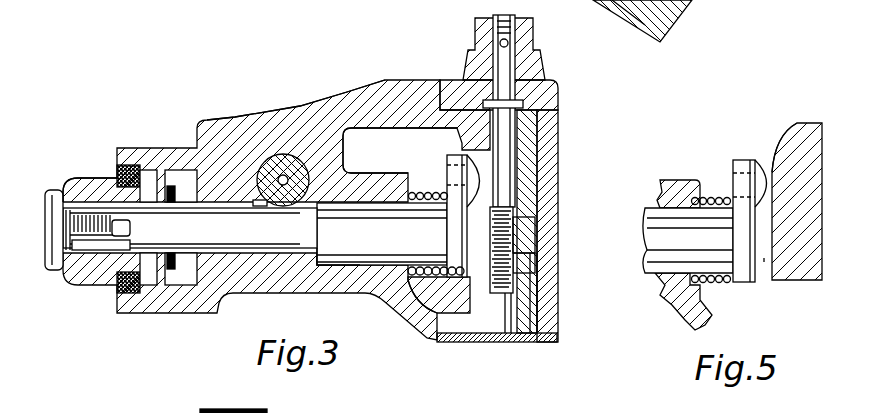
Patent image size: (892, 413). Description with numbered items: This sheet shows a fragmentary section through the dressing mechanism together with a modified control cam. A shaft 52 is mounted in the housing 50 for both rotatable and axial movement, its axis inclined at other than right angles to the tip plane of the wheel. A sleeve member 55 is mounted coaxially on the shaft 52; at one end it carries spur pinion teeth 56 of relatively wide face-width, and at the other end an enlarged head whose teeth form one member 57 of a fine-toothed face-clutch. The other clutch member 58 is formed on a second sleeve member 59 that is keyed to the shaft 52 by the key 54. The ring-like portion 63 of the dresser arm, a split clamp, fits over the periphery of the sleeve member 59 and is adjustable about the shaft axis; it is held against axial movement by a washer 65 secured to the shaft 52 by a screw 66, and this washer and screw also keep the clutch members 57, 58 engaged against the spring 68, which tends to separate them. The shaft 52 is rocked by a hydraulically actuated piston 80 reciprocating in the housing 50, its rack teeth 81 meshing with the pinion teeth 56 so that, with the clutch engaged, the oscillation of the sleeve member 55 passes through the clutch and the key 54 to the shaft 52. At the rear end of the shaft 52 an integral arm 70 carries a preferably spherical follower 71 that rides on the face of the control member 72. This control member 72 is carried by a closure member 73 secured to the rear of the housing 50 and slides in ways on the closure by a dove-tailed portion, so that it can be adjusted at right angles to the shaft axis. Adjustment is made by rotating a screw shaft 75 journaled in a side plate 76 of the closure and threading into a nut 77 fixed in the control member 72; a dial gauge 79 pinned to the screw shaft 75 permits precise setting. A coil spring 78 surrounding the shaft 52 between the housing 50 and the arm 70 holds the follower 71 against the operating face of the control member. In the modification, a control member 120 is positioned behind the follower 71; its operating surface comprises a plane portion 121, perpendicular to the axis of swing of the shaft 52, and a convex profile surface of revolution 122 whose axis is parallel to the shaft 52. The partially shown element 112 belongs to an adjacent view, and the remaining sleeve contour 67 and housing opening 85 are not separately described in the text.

In FIG. 3, the housing 50 is at (364, 288).
In FIG. 5, the housing 50 is at (680, 308).
In FIG. 3, the shaft 52 is at (285, 245).
In FIG. 5, the shaft 52 is at (657, 237).
In FIG. 3, the key 54 is at (100, 252).
In FIG. 3, the sleeve member 55 is at (240, 137).
In FIG. 3, the spur pinion teeth 56 is at (297, 262).
In FIG. 3, the clutch member 57 is at (172, 268).
In FIG. 3, the clutch member 58 is at (160, 178).
In FIG. 3, the sleeve member 59 is at (100, 200).
In FIG. 3, the ring-like portion 63 is at (90, 275).
In FIG. 3, the washer 65 is at (55, 190).
In FIG. 3, the screw 66 is at (70, 243).
In FIG. 3, the sleeve 67 is at (82, 178).
In FIG. 3, the spring 68 is at (172, 186).
In FIG. 3, the arm 70 is at (456, 278).
In FIG. 5, the arm 70 is at (745, 285).
In FIG. 3, the follower 71 is at (481, 205).
In FIG. 5, the follower 71 is at (765, 165).
In FIG. 3, the control member 72 is at (527, 165).
In FIG. 3, the closure member 73 is at (553, 120).
In FIG. 3, the screw shaft 75 is at (505, 150).
In FIG. 3, the side plate 76 is at (553, 92).
In FIG. 3, the nut 77 is at (530, 232).
In FIG. 3, the coil spring 78 is at (415, 192).
In FIG. 5, the coil spring 78 is at (712, 195).
In FIG. 3, the dial gauge 79 is at (533, 57).
In FIG. 3, the piston 80 is at (282, 155).
In FIG. 3, the rack teeth 81 is at (275, 212).
In FIG. 3, the cavity 85 is at (455, 152).
In FIG. 3, the box 112 is at (286, 412).
In FIG. 5, the control member 120 is at (803, 272).
In FIG. 5, the plane portion 121 is at (764, 258).
In FIG. 5, the convex profile surface of revolution 122 is at (783, 140).